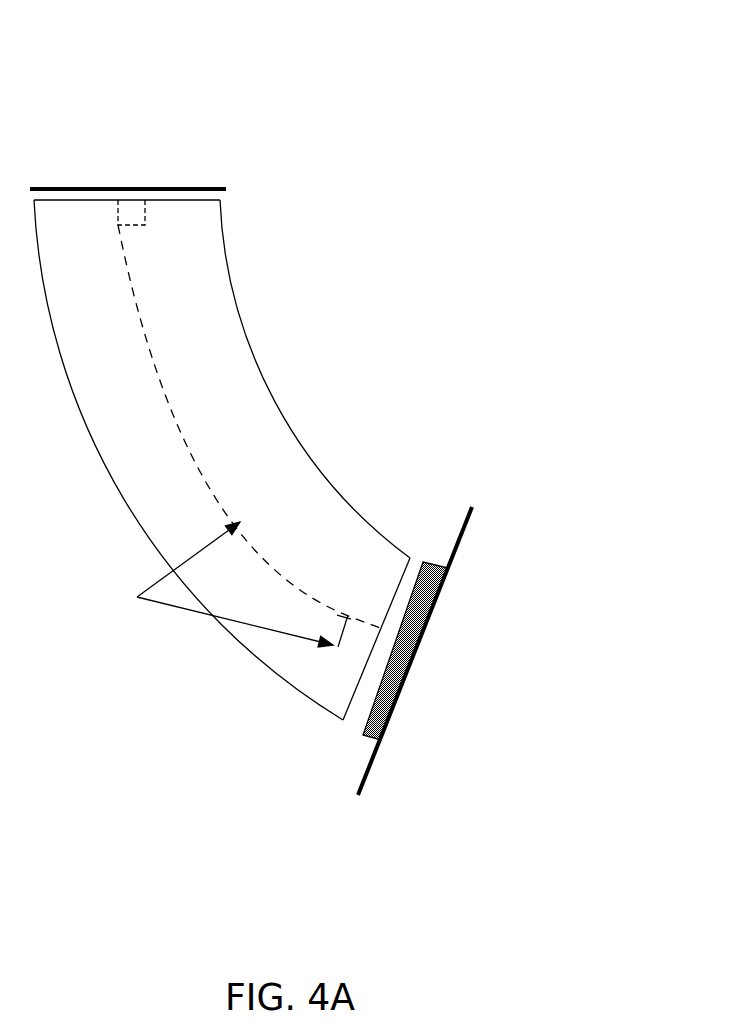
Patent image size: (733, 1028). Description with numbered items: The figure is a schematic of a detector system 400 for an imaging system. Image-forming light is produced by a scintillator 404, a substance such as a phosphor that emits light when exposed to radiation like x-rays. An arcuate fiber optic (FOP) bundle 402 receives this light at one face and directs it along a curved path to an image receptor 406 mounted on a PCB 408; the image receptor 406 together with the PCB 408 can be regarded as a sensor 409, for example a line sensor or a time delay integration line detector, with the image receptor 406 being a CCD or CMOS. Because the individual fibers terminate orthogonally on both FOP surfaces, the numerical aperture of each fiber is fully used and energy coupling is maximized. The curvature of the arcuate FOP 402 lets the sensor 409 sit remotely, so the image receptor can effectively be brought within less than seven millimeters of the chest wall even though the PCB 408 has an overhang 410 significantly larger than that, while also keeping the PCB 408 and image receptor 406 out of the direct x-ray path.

The detector system 400 is at (268, 145).
The arcuate fiber optic (FOP) bundle 402 is at (257, 363).
The scintillator 404 is at (235, 195).
The image receptor 406 is at (363, 733).
The PCB 408 is at (437, 603).
The sensor 409 is at (420, 705).
The overhang 410 is at (365, 802).